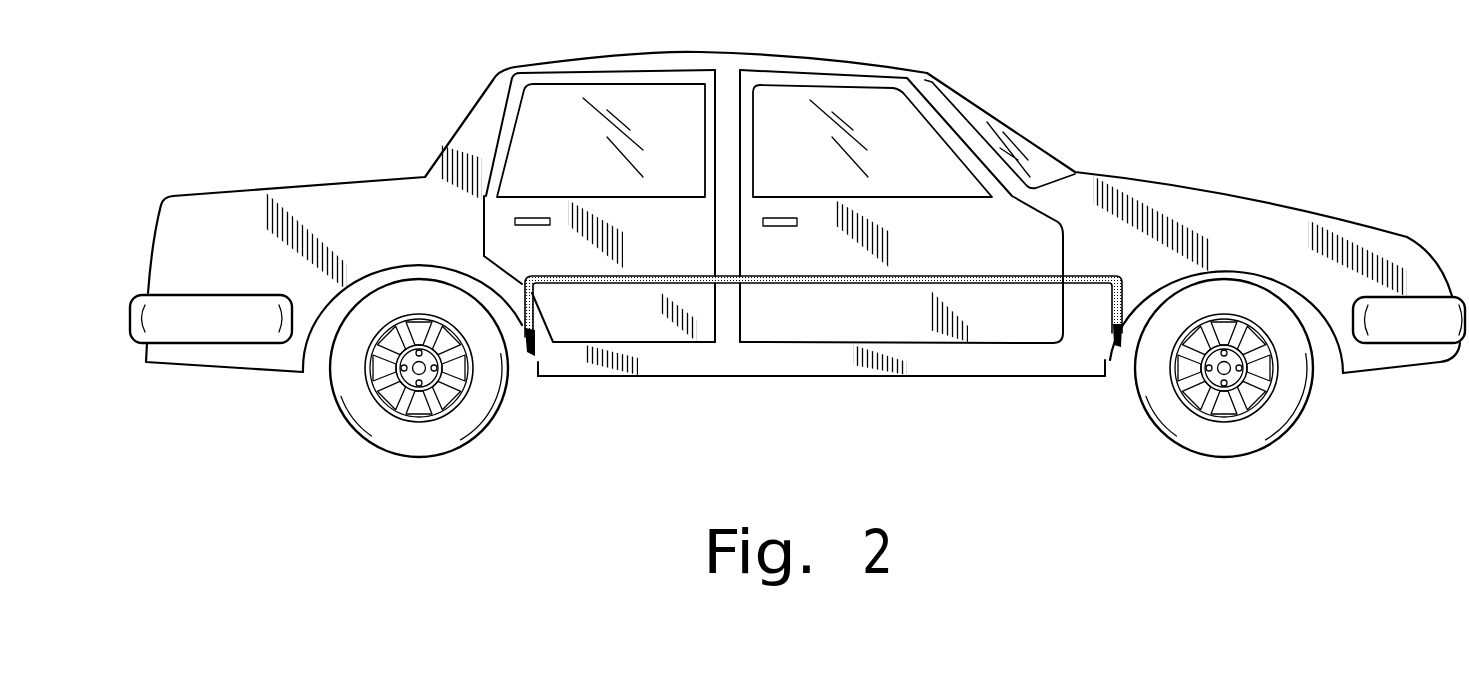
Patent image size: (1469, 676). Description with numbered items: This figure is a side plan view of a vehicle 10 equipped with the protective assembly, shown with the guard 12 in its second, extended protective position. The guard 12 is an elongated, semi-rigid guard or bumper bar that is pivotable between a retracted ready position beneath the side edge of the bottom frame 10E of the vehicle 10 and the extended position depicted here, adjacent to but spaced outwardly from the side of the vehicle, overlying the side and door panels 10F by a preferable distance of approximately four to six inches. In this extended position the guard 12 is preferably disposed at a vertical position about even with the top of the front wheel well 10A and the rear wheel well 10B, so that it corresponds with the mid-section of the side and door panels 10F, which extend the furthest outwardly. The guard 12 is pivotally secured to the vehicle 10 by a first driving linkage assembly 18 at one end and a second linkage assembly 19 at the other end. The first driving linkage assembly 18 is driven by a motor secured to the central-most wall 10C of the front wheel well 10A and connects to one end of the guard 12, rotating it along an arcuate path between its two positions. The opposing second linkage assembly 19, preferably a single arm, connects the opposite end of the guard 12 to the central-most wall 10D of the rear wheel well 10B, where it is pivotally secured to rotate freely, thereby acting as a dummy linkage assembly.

The vehicle 10 is at (210, 135).
The front wheel well 10A is at (1328, 375).
The rear wheel well 10B is at (314, 377).
The central-most wall of the front wheel well 10C is at (1148, 293).
The central-most wall of the rear wheel well 10D is at (528, 364).
The bottom frame 10E is at (1022, 377).
The side and door panels 10F is at (775, 310).
The guard 12 is at (652, 260).
The first driving linkage assembly 18 is at (1122, 346).
The second linkage assembly 19 is at (522, 350).